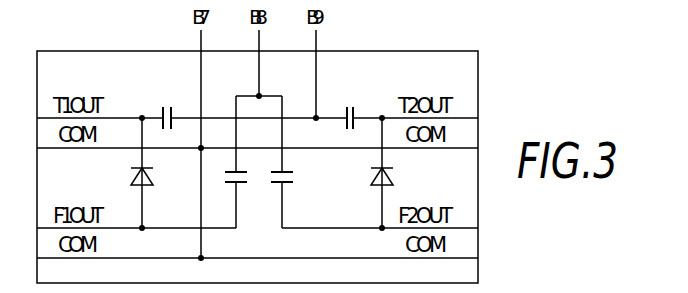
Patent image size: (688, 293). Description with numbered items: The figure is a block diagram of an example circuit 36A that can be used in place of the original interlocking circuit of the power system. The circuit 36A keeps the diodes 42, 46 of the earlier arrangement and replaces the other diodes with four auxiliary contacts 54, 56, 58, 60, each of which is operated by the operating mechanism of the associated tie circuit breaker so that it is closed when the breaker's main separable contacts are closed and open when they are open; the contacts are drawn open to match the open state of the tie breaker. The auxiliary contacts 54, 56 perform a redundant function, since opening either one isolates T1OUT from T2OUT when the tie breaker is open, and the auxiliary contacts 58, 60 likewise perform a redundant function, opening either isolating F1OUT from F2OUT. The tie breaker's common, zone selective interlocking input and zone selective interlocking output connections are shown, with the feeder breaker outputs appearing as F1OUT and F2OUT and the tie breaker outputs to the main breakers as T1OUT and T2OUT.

The circuit 36A is at (437, 51).
The diode 42 is at (130, 177).
The diode 46 is at (393, 173).
The auxiliary contact 54 is at (166, 105).
The auxiliary contact 56 is at (352, 105).
The auxiliary contact 58 is at (240, 185).
The auxiliary contact 60 is at (295, 178).